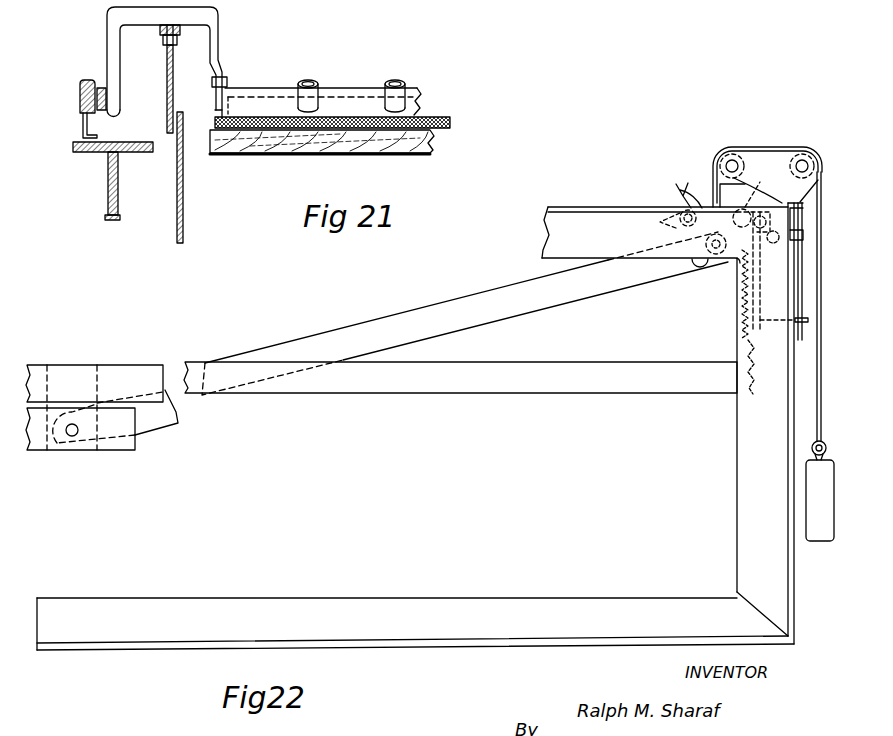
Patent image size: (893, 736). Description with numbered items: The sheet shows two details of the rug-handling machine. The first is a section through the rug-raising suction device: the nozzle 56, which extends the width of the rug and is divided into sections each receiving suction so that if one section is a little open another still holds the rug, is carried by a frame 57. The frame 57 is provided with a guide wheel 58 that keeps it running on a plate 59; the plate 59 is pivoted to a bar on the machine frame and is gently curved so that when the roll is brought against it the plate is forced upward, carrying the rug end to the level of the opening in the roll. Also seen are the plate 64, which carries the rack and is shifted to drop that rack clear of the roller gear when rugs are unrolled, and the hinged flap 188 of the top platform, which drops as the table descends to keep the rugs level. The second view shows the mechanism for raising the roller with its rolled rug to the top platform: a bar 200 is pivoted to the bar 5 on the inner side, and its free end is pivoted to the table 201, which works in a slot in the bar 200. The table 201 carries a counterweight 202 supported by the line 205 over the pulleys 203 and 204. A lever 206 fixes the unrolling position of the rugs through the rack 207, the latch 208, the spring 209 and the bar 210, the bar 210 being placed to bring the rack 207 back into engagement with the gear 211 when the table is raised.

In FIG. 21, the frame 57 is at (117, 32).
In FIG. 21, the guide wheel 58 is at (167, 45).
In FIG. 21, the plate 59 is at (167, 95).
In FIG. 21, the plate 64 is at (186, 218).
In FIG. 21, the nozzle 56 is at (340, 88).
In FIG. 21, the hinged flap 188 is at (380, 150).
In FIG. 22, the plate 5 is at (593, 383).
In FIG. 22, the bar 200 is at (395, 325).
In FIG. 22, the table 201 is at (657, 207).
In FIG. 22, the lever 206 is at (687, 186).
In FIG. 22, the pulley 204 is at (735, 140).
In FIG. 22, the pulley 203 is at (803, 140).
In FIG. 22, the gear 211 is at (760, 186).
In FIG. 22, the latch 208 is at (788, 259).
In FIG. 22, the rack 207 is at (737, 295).
In FIG. 22, the bar 210 is at (797, 303).
In FIG. 22, the spring 209 is at (744, 392).
In FIG. 22, the line 205 is at (818, 400).
In FIG. 22, the counterweight 202 is at (808, 521).